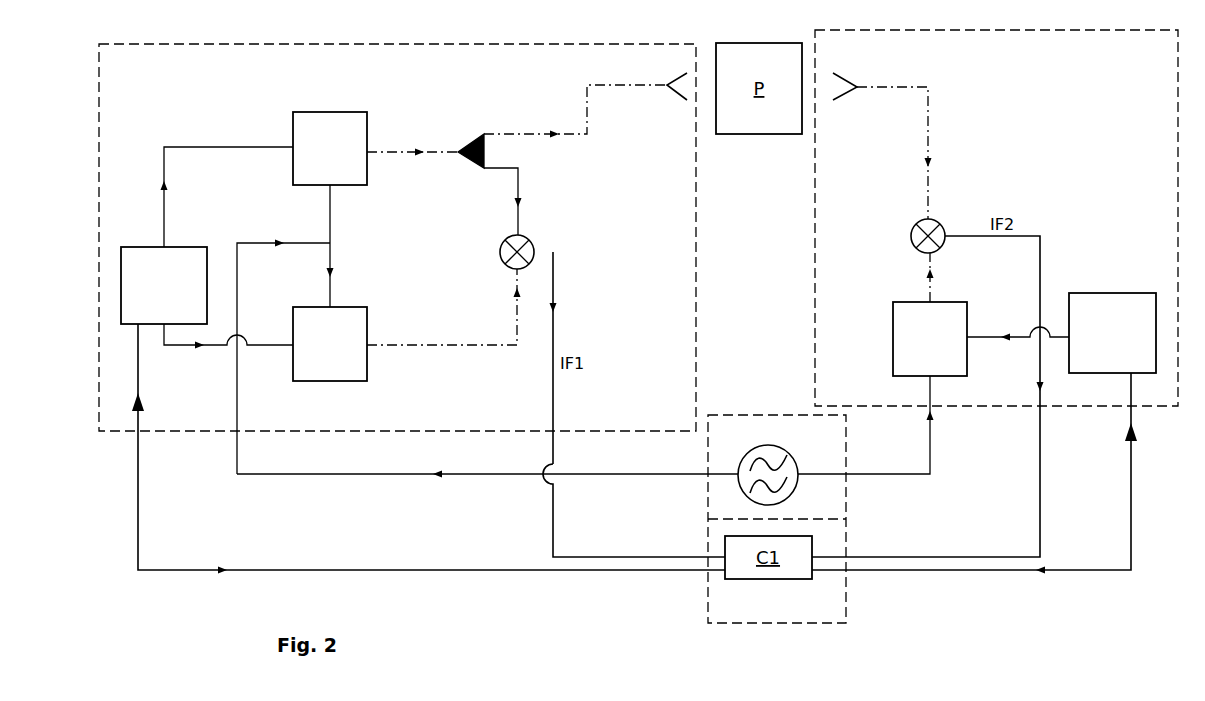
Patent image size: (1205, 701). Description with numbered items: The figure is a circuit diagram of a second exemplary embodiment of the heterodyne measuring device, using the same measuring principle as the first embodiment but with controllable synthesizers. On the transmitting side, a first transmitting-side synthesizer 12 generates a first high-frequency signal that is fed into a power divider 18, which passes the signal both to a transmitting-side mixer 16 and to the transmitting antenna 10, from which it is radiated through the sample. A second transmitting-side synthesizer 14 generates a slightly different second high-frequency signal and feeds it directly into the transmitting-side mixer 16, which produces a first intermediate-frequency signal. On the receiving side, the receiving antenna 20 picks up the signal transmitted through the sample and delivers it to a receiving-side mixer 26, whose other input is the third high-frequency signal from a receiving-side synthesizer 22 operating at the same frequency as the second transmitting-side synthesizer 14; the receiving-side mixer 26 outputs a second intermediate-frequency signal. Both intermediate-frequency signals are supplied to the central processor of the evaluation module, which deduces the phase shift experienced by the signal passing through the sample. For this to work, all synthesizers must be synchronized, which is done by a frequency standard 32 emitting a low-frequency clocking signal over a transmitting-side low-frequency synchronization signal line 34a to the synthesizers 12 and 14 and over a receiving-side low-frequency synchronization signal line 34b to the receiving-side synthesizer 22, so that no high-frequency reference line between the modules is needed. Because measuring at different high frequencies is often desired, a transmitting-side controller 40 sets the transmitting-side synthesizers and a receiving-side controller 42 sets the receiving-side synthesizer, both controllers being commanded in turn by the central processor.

The transmitting antenna 10 is at (665, 82).
The first transmitting-side synthesizer 12 is at (347, 293).
The second transmitting-side synthesizer 14 is at (407, 325).
The transmitting-side mixer 16 is at (510, 250).
The power divider 18 is at (471, 140).
The receiving antenna 20 is at (839, 75).
The receiving-side synthesizer 22 is at (930, 314).
The receiving-side mixer 26 is at (936, 228).
The frequency standard 32 is at (777, 458).
The transmitting-side low-frequency synchronization signal line 34a is at (393, 475).
The receiving-side low-frequency synchronization signal line 34b is at (902, 477).
The transmitting-side controller 40 is at (207, 248).
The receiving-side controller 42 is at (1061, 333).